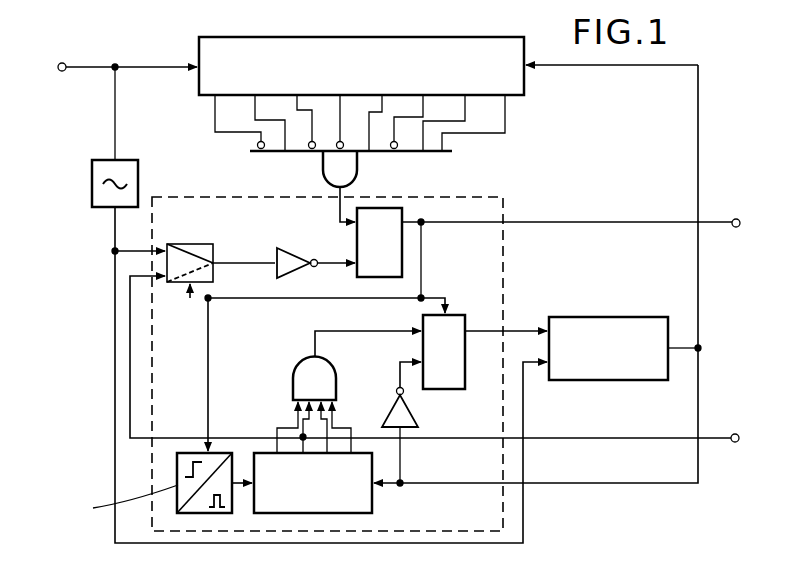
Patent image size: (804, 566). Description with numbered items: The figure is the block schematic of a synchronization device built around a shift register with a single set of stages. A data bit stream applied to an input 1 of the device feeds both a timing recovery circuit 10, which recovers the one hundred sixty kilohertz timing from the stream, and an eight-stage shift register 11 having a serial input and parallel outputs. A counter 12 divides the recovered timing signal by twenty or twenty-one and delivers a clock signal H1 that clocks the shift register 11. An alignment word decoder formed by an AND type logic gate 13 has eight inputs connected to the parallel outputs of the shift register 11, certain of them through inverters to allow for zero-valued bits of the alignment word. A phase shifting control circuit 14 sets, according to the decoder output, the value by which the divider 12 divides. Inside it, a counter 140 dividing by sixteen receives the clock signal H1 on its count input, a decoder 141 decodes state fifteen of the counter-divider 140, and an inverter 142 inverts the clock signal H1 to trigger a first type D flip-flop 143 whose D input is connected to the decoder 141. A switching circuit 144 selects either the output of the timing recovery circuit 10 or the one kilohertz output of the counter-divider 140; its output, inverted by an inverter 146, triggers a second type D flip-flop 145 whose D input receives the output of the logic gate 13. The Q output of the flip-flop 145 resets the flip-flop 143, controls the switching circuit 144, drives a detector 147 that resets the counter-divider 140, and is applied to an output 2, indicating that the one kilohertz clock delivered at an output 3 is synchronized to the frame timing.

The input 1 is at (64, 62).
The output 2 is at (733, 218).
The output 3 is at (734, 443).
The timing recovery circuit 10 is at (122, 170).
The shift register 11 is at (252, 50).
The counter 12 is at (591, 370).
The AND type logic gate 13 is at (346, 174).
The phase shifting control circuit 14 is at (545, 284).
The counter 140 is at (372, 497).
The decoder 141 is at (296, 368).
The inverter 142 is at (406, 416).
The first type D flip-flop 143 is at (423, 351).
The switching circuit 144 is at (196, 245).
The second type D flip-flop 145 is at (356, 244).
The inverter 146 is at (276, 256).
The detector 147 is at (190, 453).
The clock signal H1 is at (698, 414).